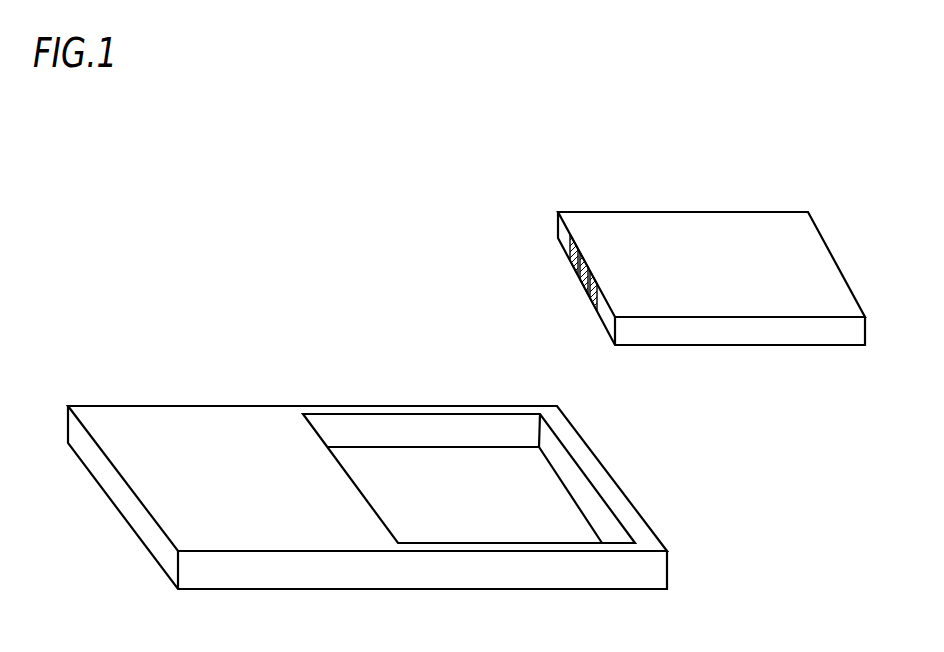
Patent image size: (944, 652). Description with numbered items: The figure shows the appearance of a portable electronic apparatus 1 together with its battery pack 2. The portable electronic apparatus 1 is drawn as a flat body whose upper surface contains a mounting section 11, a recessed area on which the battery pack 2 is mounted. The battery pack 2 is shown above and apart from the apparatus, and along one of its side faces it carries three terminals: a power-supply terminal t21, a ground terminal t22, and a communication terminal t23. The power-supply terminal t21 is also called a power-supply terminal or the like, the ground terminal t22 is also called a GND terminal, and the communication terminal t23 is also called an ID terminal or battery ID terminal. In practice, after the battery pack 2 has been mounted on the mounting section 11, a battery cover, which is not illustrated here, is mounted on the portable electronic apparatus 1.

The portable electronic apparatus 1 is at (165, 418).
The mounting section 11 is at (418, 477).
The battery pack 2 is at (760, 223).
The power-supply terminal t21 is at (573, 257).
The ground terminal t22 is at (580, 270).
The communication terminal t23 is at (583, 290).